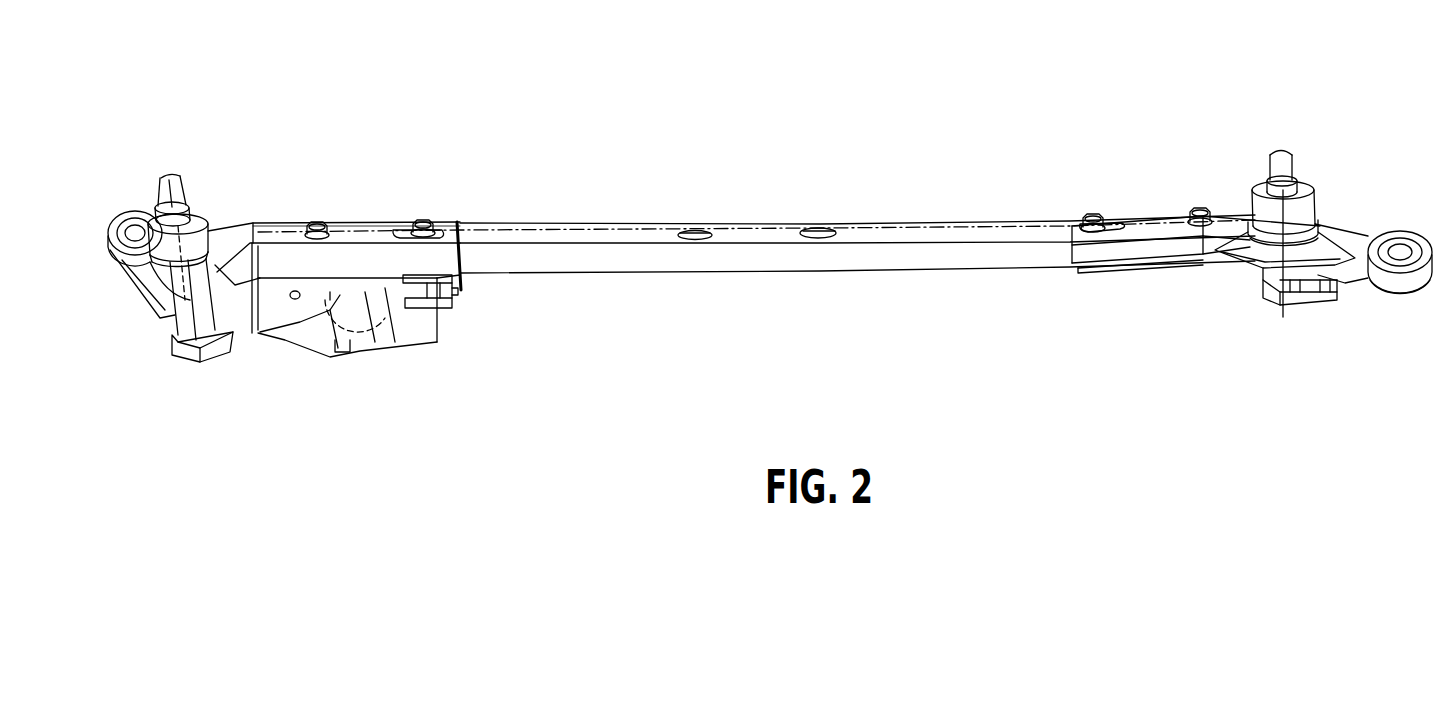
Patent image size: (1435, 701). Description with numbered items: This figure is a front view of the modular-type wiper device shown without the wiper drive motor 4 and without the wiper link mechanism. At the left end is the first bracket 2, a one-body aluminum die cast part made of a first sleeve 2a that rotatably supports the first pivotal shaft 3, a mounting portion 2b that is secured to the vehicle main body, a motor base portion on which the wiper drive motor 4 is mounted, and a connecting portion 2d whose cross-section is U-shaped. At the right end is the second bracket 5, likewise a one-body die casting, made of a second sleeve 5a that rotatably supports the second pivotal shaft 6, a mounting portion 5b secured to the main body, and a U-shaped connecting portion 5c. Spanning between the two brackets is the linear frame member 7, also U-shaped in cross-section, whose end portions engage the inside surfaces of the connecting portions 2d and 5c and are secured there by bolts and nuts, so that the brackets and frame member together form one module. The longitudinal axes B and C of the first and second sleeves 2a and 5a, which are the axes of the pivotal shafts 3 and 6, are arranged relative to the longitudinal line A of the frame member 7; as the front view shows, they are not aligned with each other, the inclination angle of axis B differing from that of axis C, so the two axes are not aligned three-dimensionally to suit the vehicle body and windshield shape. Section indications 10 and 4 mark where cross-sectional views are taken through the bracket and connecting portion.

The first bracket 2 is at (285, 307).
The first sleeve 2a is at (178, 277).
The mounting portion 2b is at (132, 262).
The connecting portion 2d is at (372, 222).
The first pivotal shaft 3 is at (177, 175).
The wiper drive motor 4 is at (450, 180).
The second bracket 5 is at (1148, 300).
The second sleeve 5a is at (1263, 237).
The mounting portion 5b is at (1333, 283).
The connecting portion 5c is at (1102, 255).
The second pivotal shaft 6 is at (1292, 165).
The linear frame member 7 is at (757, 262).
The section line X 10 is at (282, 260).
The longitudinal line of the frame member A is at (865, 228).
The longitudinal axis of the first sleeve B is at (153, 127).
The longitudinal axis of the second sleeve C is at (1287, 100).